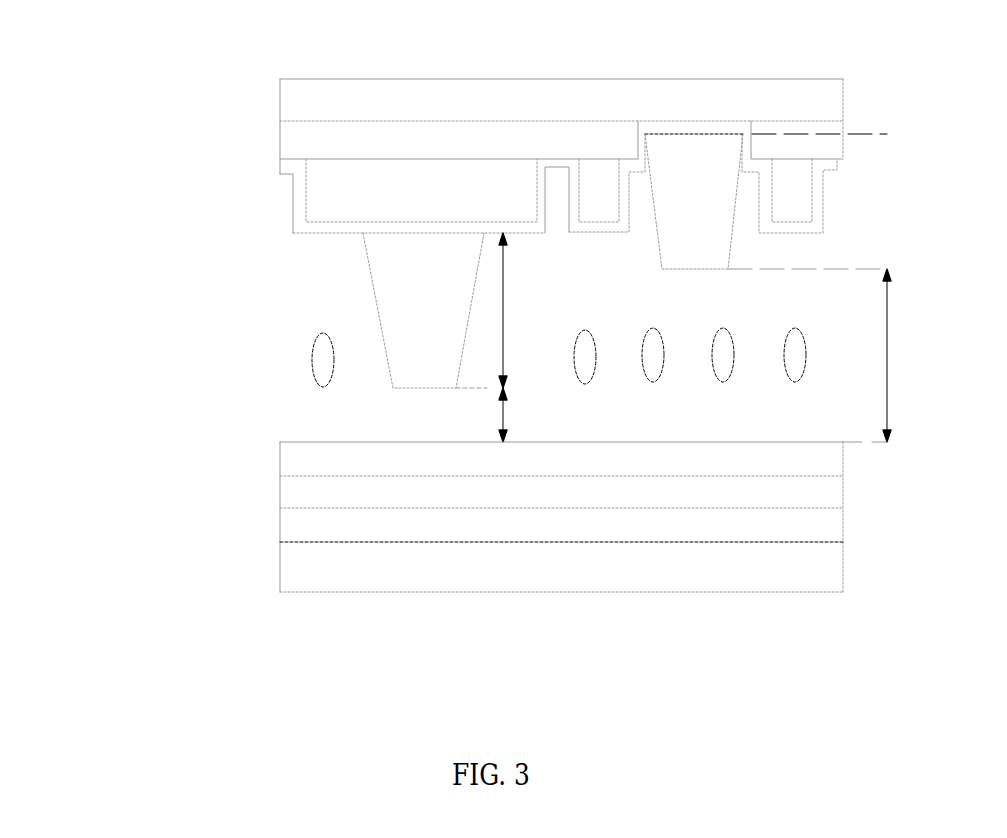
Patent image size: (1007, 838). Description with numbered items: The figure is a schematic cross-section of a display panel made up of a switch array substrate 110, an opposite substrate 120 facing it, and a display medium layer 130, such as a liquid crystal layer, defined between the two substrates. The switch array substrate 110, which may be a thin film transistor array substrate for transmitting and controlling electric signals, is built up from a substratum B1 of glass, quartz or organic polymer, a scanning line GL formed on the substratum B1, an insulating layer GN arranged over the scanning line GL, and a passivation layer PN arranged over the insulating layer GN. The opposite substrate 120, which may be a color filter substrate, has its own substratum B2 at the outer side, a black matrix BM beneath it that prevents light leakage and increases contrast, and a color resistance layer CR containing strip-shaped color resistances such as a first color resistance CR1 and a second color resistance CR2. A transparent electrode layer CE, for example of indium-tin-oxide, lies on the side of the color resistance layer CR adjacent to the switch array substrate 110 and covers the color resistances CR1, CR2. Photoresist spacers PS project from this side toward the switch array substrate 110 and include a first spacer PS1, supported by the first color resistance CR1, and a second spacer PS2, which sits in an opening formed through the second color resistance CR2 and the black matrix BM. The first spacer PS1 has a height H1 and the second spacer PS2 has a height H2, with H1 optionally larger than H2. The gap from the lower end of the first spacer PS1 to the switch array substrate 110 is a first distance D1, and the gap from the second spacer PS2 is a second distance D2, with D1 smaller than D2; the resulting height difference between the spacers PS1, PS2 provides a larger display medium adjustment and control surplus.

The switch array substrate 110 is at (150, 430).
The opposite substrate 120 is at (143, 70).
The display medium layer 130 is at (312, 362).
The substratum B1 is at (347, 573).
The scanning line GL is at (350, 528).
The insulating layer GN is at (350, 493).
The passivation layer PN is at (350, 455).
The substratum B2 is at (328, 96).
The black matrix BM is at (327, 141).
The color resistance layer CR is at (327, 186).
The first color resistance CR1 is at (418, 188).
The second color resistance CR2 is at (595, 188).
The transparent electrode layer CE is at (310, 228).
The spacer PS is at (655, 662).
The first spacer PS1 is at (413, 346).
The second spacer PS2 is at (703, 245).
The height of the first spacer H1 is at (526, 310).
The height of the second spacer H2 is at (887, 134).
The first distance D1 is at (530, 415).
The second distance D2 is at (902, 355).